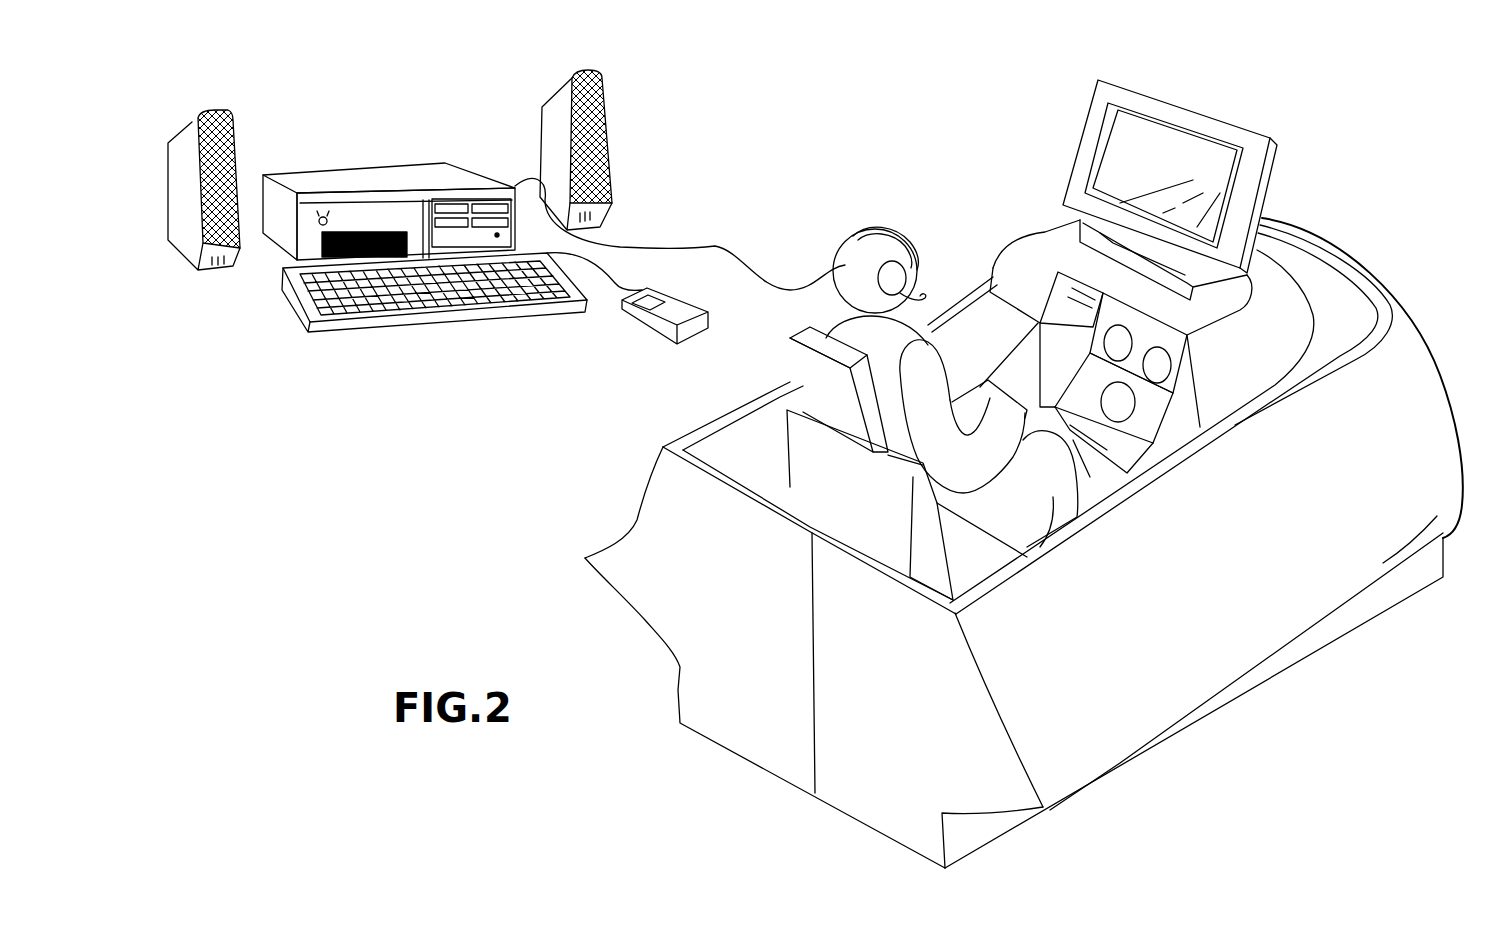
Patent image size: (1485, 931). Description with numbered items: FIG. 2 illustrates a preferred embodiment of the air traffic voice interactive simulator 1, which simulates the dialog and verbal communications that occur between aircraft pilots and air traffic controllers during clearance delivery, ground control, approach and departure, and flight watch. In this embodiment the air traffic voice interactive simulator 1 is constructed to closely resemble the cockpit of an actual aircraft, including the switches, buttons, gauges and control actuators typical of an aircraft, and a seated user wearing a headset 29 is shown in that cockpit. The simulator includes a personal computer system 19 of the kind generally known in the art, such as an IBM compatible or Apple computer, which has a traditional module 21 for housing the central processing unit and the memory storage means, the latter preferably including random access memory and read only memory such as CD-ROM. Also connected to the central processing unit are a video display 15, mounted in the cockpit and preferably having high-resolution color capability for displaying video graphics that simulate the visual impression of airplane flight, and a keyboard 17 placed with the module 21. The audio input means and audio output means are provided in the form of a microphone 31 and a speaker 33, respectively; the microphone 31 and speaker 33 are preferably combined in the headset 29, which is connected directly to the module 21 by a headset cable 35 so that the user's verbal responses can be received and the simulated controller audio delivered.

The air traffic voice interactive simulator 1 is at (1421, 310).
The video display 15 is at (1273, 138).
The keyboard 17 is at (440, 323).
The computer system 19 is at (485, 212).
The module 21 is at (458, 166).
The headset 29 is at (853, 233).
The microphone 31 is at (922, 300).
The speaker 33 is at (192, 121).
The headset cable 35 is at (700, 246).